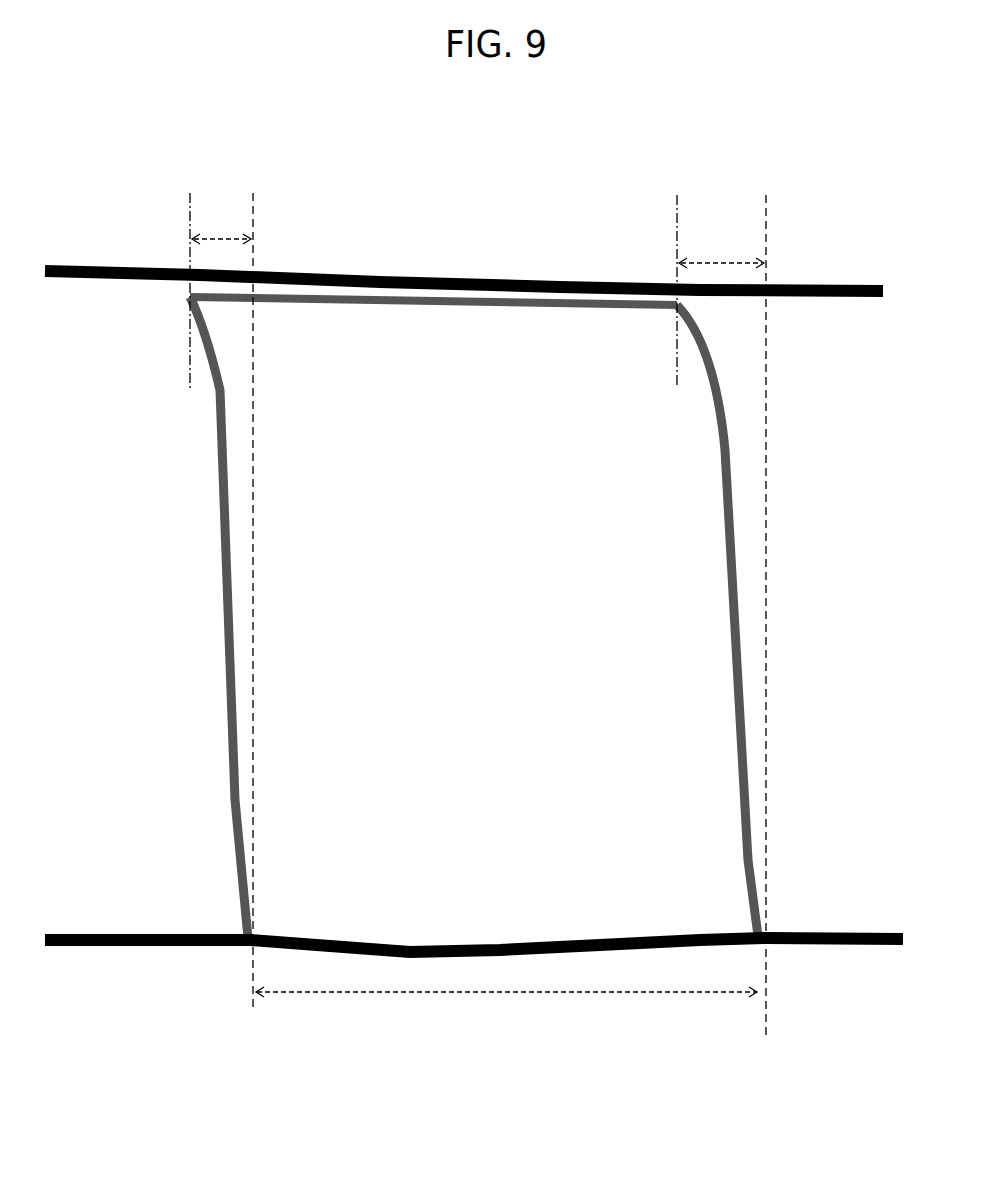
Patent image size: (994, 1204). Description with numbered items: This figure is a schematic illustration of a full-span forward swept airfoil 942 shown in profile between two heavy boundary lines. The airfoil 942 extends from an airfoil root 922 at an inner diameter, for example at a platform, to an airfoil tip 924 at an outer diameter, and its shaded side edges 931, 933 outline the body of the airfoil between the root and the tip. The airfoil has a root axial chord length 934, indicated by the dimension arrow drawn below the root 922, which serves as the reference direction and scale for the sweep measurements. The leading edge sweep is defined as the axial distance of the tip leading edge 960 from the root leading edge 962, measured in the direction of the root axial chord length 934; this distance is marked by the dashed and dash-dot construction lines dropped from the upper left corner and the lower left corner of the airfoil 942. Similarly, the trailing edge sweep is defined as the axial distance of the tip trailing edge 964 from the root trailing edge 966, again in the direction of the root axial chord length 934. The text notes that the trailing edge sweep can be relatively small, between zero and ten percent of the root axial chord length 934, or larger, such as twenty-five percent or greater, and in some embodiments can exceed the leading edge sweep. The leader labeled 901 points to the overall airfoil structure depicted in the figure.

The thin film structure 901 is at (333, 769).
The airfoil root 922 is at (410, 948).
The airfoil tip 924 is at (468, 300).
The left sidewall 931 is at (225, 587).
The right sidewall 933 is at (720, 428).
The root axial chord length 934 is at (506, 1006).
The full-span forward swept airfoil 942 is at (487, 510).
The tip leading edge 960 is at (188, 293).
The root leading edge 962 is at (232, 943).
The tip trailing edge 964 is at (678, 305).
The root trailing edge 966 is at (767, 935).